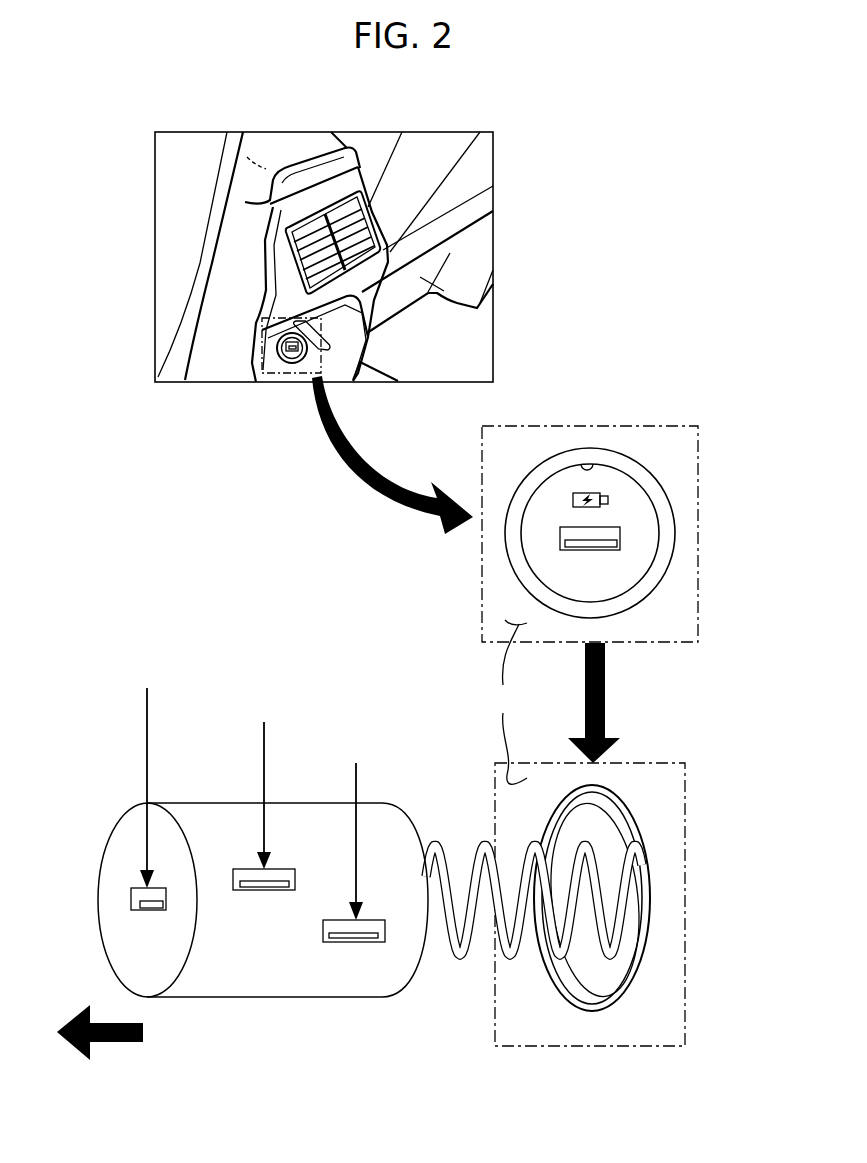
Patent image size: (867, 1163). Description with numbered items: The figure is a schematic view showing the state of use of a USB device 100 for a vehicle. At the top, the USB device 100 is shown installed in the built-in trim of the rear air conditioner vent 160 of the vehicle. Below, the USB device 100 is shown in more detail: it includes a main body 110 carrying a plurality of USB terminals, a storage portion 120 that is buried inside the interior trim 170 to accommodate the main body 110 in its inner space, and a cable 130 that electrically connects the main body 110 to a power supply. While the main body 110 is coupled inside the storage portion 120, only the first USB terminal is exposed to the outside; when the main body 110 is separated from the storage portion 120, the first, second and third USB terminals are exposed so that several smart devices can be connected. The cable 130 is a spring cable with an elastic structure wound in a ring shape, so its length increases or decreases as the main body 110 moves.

The USB device 100 is at (275, 364).
The main body 110 is at (542, 553).
The storage portion 120 is at (577, 465).
The cable 130 is at (483, 845).
The rear air conditioner vent 160 is at (494, 244).
The interior trim 170 is at (508, 702).